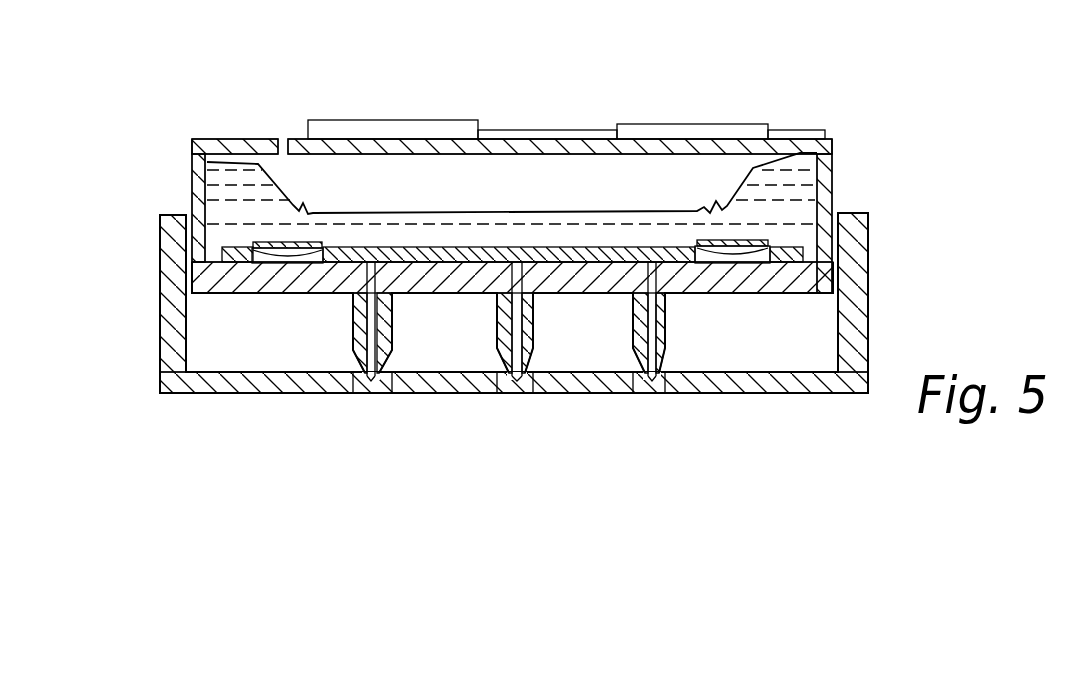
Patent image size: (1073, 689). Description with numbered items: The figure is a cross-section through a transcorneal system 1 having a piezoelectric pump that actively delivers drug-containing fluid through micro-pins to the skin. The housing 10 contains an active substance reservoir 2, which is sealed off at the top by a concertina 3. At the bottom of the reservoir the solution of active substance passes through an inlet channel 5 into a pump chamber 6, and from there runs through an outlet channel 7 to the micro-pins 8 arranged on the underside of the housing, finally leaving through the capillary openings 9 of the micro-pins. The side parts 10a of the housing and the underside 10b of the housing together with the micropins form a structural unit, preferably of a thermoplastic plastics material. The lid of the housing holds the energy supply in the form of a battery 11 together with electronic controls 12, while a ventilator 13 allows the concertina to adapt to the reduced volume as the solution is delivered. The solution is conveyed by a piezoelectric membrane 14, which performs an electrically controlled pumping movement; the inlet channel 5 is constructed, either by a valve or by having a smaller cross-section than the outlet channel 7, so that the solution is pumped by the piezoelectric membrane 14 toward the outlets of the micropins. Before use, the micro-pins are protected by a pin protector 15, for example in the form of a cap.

The transcorneal system 1 is at (585, 104).
The active substance reservoir 2 is at (741, 210).
The concertina 3 is at (820, 187).
The inlet channel 5 is at (800, 262).
The pump chamber 6 is at (215, 193).
The outlet channel 7 is at (680, 258).
The micro-pins 8 is at (350, 355).
The capillary openings 9 is at (531, 352).
The housing 10 is at (192, 140).
The side parts of the housing 10a is at (192, 178).
The underside of the housing 10b is at (298, 294).
The battery 11 is at (465, 121).
The electronic controls 12 is at (760, 125).
The ventilator 13 is at (287, 140).
The piezoelectric membrane 14 is at (311, 243).
The pin protector 15 is at (163, 385).